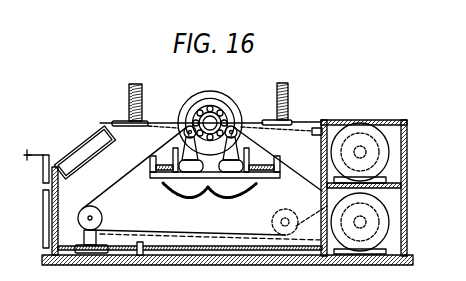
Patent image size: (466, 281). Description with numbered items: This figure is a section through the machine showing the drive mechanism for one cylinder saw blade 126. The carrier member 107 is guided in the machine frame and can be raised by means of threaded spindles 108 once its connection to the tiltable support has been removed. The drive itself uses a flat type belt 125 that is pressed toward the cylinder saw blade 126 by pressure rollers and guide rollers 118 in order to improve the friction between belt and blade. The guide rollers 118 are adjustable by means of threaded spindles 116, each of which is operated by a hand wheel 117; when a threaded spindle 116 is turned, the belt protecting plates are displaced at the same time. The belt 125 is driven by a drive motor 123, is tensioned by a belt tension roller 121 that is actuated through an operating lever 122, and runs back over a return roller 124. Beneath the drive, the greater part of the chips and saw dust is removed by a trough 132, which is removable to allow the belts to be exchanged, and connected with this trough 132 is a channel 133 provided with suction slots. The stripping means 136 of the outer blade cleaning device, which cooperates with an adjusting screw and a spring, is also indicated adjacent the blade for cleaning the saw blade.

The carrier member 107 is at (203, 127).
The threaded spindles 108 is at (129, 91).
The threaded spindles 116 is at (149, 177).
The hand wheel 117 is at (36, 160).
The guide rollers 118 is at (211, 149).
The belt tension roller 121 is at (103, 218).
The operating lever 122 is at (45, 216).
The drive motor 123 is at (389, 150).
The return roller 124 is at (300, 201).
The belt 125 is at (278, 159).
The cylinder saw blade 126 is at (197, 98).
The trough 132 is at (232, 200).
The channel 133 is at (206, 192).
The stripping means 136 is at (110, 122).